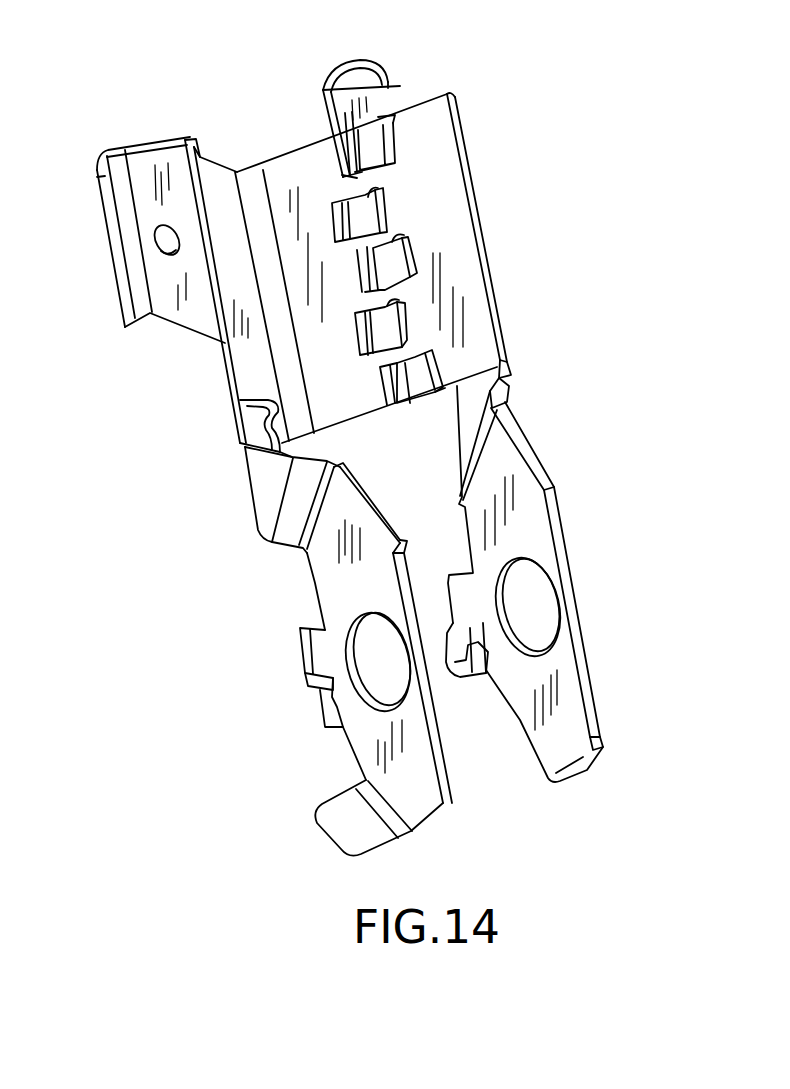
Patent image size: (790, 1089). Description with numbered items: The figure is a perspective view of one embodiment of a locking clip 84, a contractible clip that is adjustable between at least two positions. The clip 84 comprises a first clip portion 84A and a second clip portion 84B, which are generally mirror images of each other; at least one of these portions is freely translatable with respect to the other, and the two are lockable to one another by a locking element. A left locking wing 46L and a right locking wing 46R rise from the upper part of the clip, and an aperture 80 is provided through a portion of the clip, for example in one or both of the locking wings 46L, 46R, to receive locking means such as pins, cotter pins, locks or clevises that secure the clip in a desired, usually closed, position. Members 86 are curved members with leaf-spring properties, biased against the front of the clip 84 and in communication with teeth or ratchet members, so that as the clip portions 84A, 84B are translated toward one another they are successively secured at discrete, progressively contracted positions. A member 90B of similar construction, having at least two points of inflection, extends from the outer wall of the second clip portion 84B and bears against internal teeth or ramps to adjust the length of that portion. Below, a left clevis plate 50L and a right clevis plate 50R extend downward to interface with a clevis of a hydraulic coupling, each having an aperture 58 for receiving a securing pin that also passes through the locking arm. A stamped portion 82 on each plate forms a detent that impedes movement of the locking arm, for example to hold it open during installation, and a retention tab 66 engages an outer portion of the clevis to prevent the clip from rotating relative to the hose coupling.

The right locking wing 46R is at (130, 167).
The left locking wing 46L is at (385, 76).
The locking clip 84 is at (430, 312).
The first clip portion 84A is at (462, 228).
The second clip portion 84B is at (283, 175).
The members 86 is at (425, 392).
The aperture 80 is at (166, 252).
The member 90B is at (250, 430).
The right clevis plate 50R is at (345, 664).
The left clevis plate 50L is at (577, 740).
The aperture 58 is at (547, 628).
The stamped portion 82 is at (332, 728).
The retention tab 66 is at (353, 825).